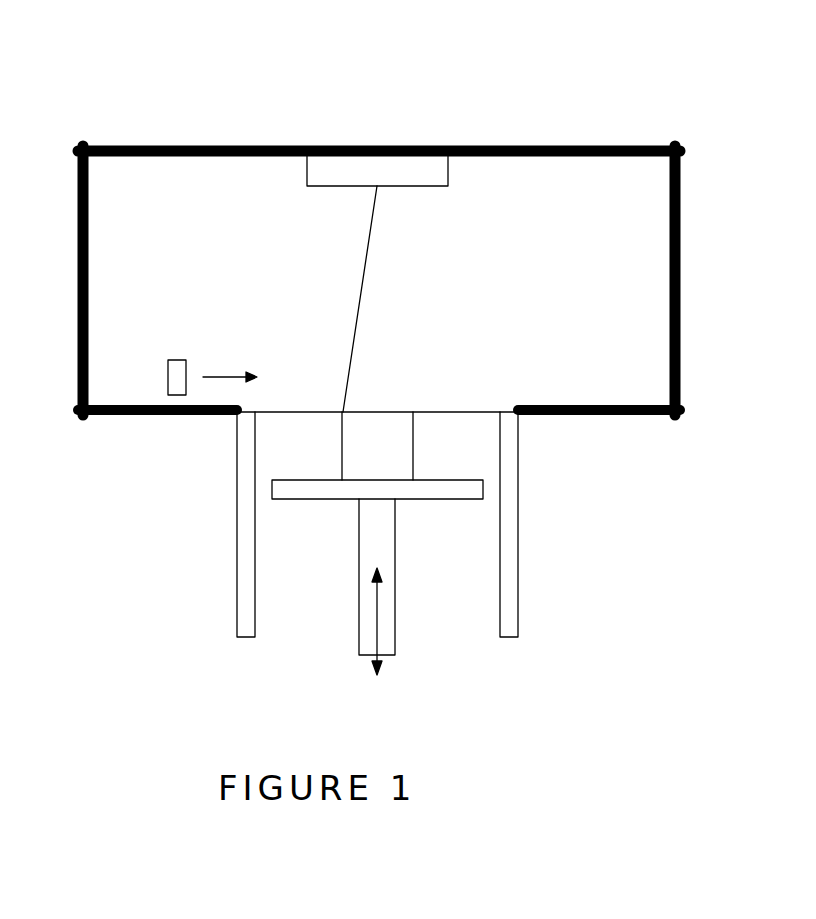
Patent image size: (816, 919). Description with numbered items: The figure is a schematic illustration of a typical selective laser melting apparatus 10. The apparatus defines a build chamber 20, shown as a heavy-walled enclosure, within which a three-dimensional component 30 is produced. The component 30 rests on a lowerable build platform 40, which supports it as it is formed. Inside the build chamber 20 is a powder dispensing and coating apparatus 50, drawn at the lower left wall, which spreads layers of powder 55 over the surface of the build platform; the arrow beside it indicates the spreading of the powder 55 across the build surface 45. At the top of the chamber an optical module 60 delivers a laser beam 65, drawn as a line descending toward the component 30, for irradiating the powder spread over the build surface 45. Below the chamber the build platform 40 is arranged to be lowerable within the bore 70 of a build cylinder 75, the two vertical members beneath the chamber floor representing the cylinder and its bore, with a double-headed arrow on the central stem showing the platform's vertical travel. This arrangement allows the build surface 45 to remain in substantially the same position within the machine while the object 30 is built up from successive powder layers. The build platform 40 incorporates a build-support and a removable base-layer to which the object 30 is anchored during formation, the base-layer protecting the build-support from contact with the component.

The selective laser melting apparatus 10 is at (613, 103).
The build chamber 20 is at (379, 280).
The three-dimensional component 30 is at (377, 446).
The lowerable build platform 40 is at (476, 487).
The build surface 45 is at (450, 410).
The powder dispensing and coating apparatus 50 is at (174, 372).
The powder 55 is at (205, 407).
The optical module 60 is at (356, 163).
The laser beam 65 is at (372, 243).
The bore 70 is at (255, 545).
The build cylinder 75 is at (510, 573).